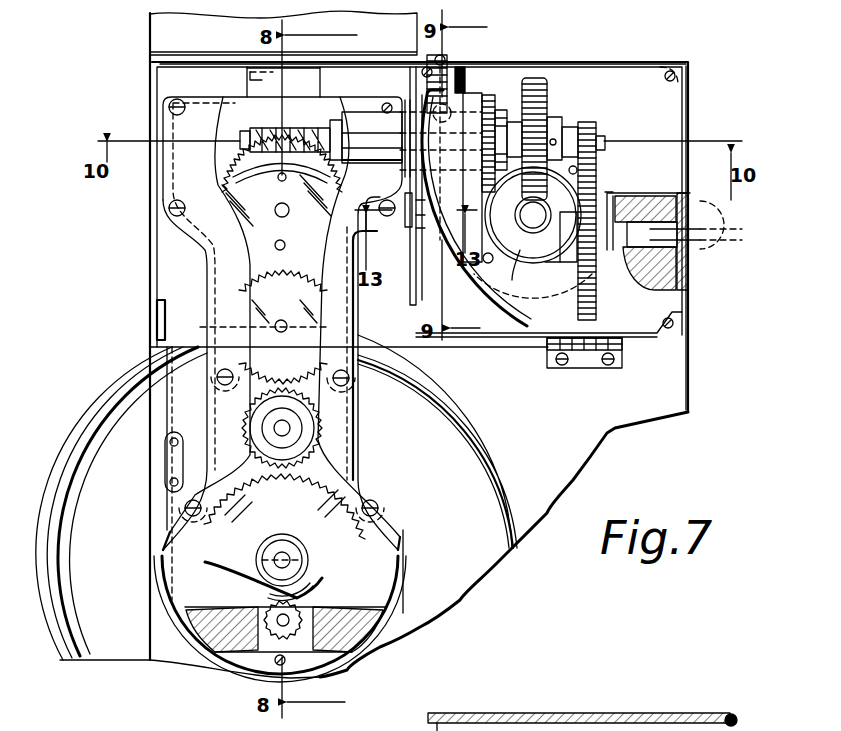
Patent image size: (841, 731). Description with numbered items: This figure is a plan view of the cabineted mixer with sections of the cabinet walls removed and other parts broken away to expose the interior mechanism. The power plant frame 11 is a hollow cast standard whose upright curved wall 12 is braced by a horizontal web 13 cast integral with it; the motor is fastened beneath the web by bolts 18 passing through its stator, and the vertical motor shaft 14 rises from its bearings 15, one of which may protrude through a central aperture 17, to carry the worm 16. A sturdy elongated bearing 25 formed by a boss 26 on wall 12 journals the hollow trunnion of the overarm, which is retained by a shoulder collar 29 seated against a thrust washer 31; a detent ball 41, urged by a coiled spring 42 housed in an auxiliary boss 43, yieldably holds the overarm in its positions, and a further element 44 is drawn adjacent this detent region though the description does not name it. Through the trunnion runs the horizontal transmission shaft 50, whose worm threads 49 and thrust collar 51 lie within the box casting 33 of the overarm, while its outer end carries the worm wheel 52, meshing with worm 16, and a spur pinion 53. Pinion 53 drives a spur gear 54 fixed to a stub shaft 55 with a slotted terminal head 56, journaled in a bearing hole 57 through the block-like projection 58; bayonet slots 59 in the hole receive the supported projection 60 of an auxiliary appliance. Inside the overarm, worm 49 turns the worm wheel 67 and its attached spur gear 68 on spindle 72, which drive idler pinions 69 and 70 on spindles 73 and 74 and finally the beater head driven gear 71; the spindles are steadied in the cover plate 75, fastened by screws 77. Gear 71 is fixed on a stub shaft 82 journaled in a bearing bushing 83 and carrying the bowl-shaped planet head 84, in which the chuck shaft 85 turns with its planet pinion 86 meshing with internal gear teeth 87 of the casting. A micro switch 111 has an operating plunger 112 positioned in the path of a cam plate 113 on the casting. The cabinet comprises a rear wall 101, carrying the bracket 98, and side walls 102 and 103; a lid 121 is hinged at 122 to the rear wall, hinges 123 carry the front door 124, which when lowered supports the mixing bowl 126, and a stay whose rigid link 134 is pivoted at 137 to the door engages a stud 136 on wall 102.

The power plant frame 11 is at (428, 270).
The curved wall 12 is at (476, 303).
The horizontal web 13 is at (611, 190).
The motor shaft 14 is at (531, 219).
The bearings 15 is at (518, 259).
The worm 16 is at (537, 249).
The central aperture 17 is at (560, 263).
The bolts 18 is at (491, 264).
The bearing 25 is at (497, 100).
The boss 26 is at (412, 247).
The shoulder collar 29 is at (508, 108).
The thrust washer 31 is at (487, 100).
The box casting 33 is at (391, 596).
The detent ball 41 is at (478, 93).
The coiled spring 42 is at (426, 90).
The auxiliary boss 43 is at (472, 68).
The worm 44 is at (437, 58).
The worm threads 49 is at (298, 130).
The horizontal transmission shaft 50 is at (246, 137).
The thrust collar 51 is at (338, 129).
The worm wheel 52 is at (541, 93).
The spur pinion 53 is at (584, 125).
The spur gear 54 is at (597, 297).
The stub shaft 55 is at (622, 212).
The slotted terminal head 56 is at (638, 213).
The bearing hole 57 is at (740, 231).
The block-like projection 58 is at (660, 268).
The bayonet slots 59 is at (690, 256).
The supported projection 60 is at (717, 218).
The worm wheel 67 is at (246, 167).
The spur gear 68 is at (248, 181).
The idler pinion 69 is at (317, 293).
The idler pinion 70 is at (310, 388).
The beater head driven gear 71 is at (350, 542).
The spindle 72 is at (279, 217).
The spindle 73 is at (288, 327).
The spindle 74 is at (290, 428).
The cover plate 75 is at (225, 215).
The screws 77 is at (180, 104).
The stub shaft 82 is at (282, 548).
The bearing bushing 83 is at (248, 587).
The planet head 84 is at (243, 656).
The chuck shaft 85 is at (299, 619).
The planet pinion 86 is at (318, 590).
The internal gear teeth 87 is at (258, 619).
The bracket 98 is at (258, 81).
The rear wall 101 is at (620, 61).
The side wall 102 is at (154, 78).
The side wall 103 is at (683, 103).
The micro switch 111 is at (405, 228).
The operating plunger 112 is at (413, 213).
The cam plate 113 is at (414, 263).
The lid 121 is at (165, 30).
The hinge 122 is at (744, 722).
The hinges 123 is at (588, 363).
The front door 124 is at (620, 438).
The mixing bowl 126 is at (487, 444).
The rigid link 134 is at (162, 339).
The stud 136 is at (166, 314).
The pivot 137 is at (158, 463).